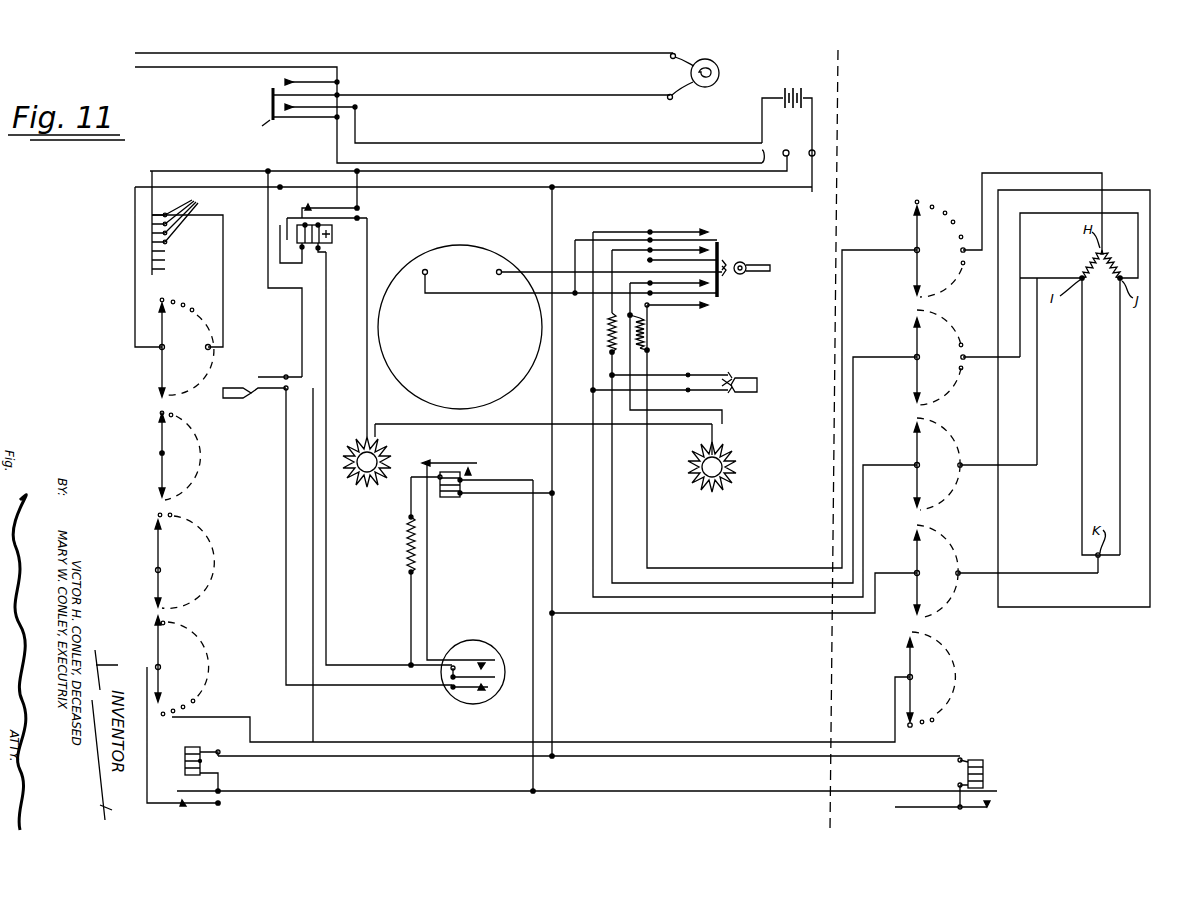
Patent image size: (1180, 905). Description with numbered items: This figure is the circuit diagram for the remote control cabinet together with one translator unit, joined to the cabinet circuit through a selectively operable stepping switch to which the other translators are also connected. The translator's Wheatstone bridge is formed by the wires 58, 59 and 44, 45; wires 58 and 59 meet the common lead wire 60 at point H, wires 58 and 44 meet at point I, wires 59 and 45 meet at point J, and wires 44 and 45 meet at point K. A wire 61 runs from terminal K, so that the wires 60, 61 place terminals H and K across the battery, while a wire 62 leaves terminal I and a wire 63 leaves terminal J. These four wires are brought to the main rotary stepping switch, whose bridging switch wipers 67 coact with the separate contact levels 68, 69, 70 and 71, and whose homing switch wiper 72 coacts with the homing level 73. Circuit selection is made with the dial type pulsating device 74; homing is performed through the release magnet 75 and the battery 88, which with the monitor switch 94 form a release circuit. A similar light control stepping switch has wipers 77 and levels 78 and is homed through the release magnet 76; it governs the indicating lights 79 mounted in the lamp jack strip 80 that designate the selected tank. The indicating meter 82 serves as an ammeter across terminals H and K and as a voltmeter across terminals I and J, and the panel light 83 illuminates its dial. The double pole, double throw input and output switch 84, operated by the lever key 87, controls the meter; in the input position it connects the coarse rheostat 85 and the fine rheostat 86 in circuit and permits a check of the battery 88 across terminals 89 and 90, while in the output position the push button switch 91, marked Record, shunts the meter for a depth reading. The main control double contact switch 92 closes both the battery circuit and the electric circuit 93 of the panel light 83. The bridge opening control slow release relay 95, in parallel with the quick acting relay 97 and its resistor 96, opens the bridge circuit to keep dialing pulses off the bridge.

The bridge wire 44 is at (1080, 428).
The bridge wire 45 is at (1118, 464).
The Wheatstone bridge wire 58 is at (1088, 260).
The Wheatstone bridge wire 59 is at (1110, 256).
The common lead wire 60 is at (1025, 173).
The wire 61 is at (1028, 578).
The wire 62 is at (1038, 372).
The wire 63 is at (1038, 215).
The bridging switch wipers 67 is at (914, 236).
The contact level 68 is at (952, 275).
The contact level 69 is at (952, 388).
The contact level 70 is at (952, 493).
The contact level 71 is at (952, 600).
The homing switch wiper 72 is at (910, 668).
The homing level 73 is at (955, 680).
The dial type pulsating device 74 is at (462, 701).
The release magnet 75 is at (985, 764).
The release magnet 76 is at (192, 746).
The wipers 77 is at (157, 415).
The levels 78 is at (205, 480).
The indicating lights 79 is at (190, 216).
The lamp jack strip 80 is at (152, 255).
The indicating meter 82 is at (470, 364).
The panel light 83 is at (716, 62).
The input and output switch 84 is at (717, 240).
The rheostat 85 is at (730, 485).
The rheostat 86 is at (370, 488).
The lever key 87 is at (772, 268).
The battery 88 is at (793, 112).
The terminal 89 is at (760, 158).
The terminal 90 is at (814, 156).
The push button switch 91 is at (732, 395).
The main control double contact switch 92 is at (268, 107).
The electric circuit 93 is at (177, 57).
The monitor switch 94 is at (261, 373).
The bridge opening control slow release relay 95 is at (323, 217).
The resistor 96 is at (408, 550).
The quick acting relay 97 is at (450, 498).